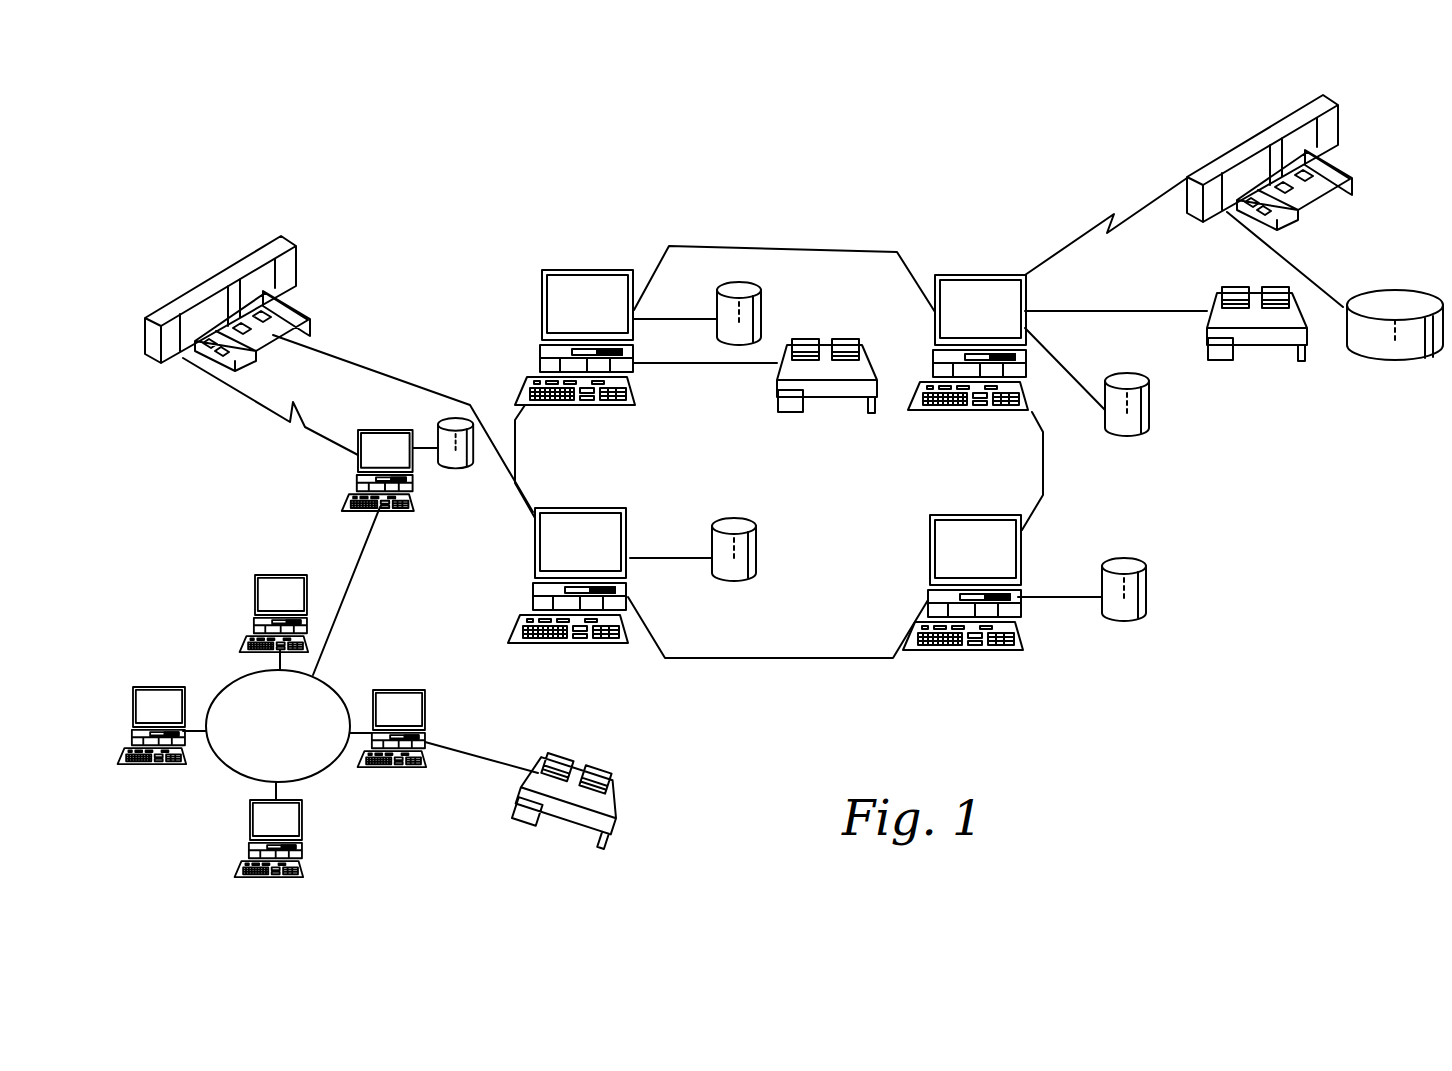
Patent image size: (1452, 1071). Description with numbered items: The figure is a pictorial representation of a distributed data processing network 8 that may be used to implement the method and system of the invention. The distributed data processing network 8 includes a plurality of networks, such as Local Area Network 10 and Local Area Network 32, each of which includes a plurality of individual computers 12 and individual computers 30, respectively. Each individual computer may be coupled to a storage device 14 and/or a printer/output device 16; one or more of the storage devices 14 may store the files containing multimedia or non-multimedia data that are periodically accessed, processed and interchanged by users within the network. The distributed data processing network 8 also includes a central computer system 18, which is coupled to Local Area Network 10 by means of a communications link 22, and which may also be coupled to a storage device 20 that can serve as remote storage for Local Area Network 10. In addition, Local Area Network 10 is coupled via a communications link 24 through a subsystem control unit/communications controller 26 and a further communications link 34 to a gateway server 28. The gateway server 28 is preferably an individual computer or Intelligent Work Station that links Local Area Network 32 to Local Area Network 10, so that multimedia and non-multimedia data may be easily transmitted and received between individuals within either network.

The distributed data processing network 8 is at (815, 213).
The Local Area Network (LAN) 10 is at (803, 662).
The individual computer 12 is at (607, 270).
The storage device 14 is at (760, 301).
The printer/output device 16 is at (823, 347).
The central computer system 18 is at (1263, 133).
The storage device 20 is at (1415, 293).
The communications link 22 is at (1145, 207).
The communications link 24 is at (390, 375).
The subsystem control unit/communications controller 26 is at (297, 252).
The gateway server 28 is at (383, 430).
The individual computer 30 is at (292, 575).
The Local Area Network (LAN) 32 is at (230, 767).
The communications link 34 is at (312, 427).